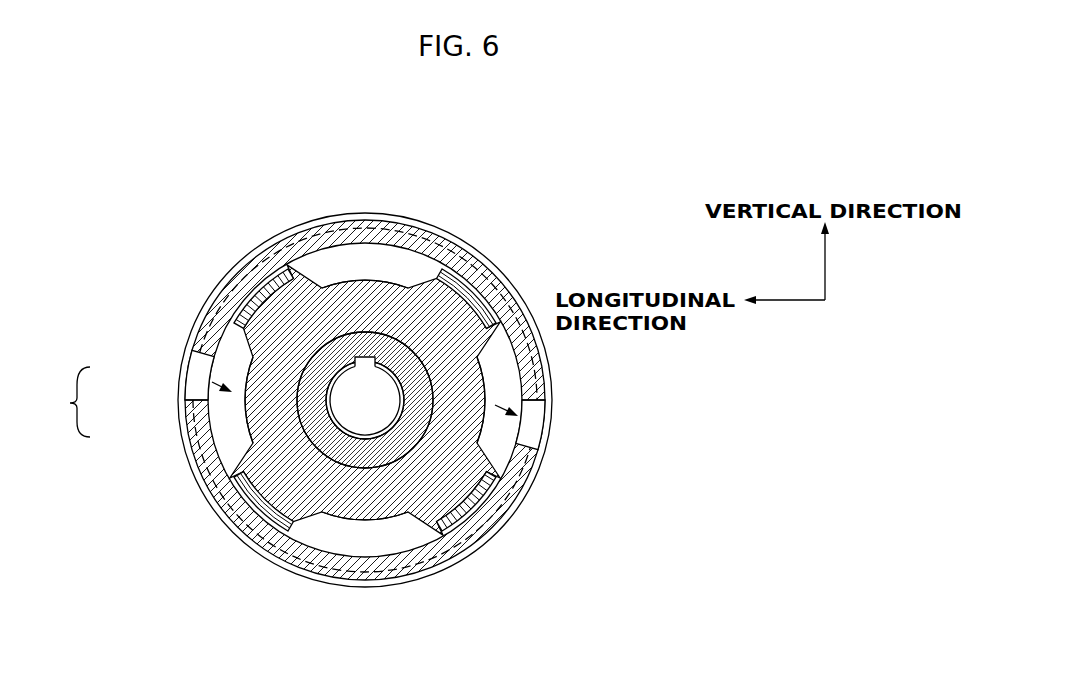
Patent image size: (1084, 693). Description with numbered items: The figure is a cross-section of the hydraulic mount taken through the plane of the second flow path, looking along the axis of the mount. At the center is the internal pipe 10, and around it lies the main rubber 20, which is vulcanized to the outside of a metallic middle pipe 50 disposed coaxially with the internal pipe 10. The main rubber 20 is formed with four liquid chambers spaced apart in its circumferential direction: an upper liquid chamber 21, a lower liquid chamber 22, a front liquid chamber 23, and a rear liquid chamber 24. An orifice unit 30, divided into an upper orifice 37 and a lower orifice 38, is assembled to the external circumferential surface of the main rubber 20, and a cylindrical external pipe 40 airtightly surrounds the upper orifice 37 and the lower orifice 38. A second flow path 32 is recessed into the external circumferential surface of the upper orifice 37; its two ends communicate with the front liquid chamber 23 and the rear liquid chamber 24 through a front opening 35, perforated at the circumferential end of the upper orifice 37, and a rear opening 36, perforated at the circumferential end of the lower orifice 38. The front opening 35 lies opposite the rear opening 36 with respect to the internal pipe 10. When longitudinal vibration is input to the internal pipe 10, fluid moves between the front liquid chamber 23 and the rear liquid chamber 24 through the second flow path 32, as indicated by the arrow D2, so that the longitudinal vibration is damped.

The internal pipe 10 is at (335, 445).
The main rubber 20 is at (258, 500).
The upper liquid chamber 21 is at (358, 262).
The lower liquid chamber 22 is at (392, 540).
The front liquid chamber 23 is at (200, 445).
The rear liquid chamber 24 is at (505, 368).
The orifice unit 30 is at (67, 402).
The second flow path 32 is at (390, 224).
The front opening 35 is at (225, 340).
The rear opening 36 is at (545, 437).
The upper orifice 37 is at (205, 352).
The lower orifice 38 is at (202, 440).
The external pipe 40 is at (455, 232).
The middle pipe 50 is at (480, 500).
The arrow indicating fluid movement under longitudinal vibration D2 is at (538, 402).